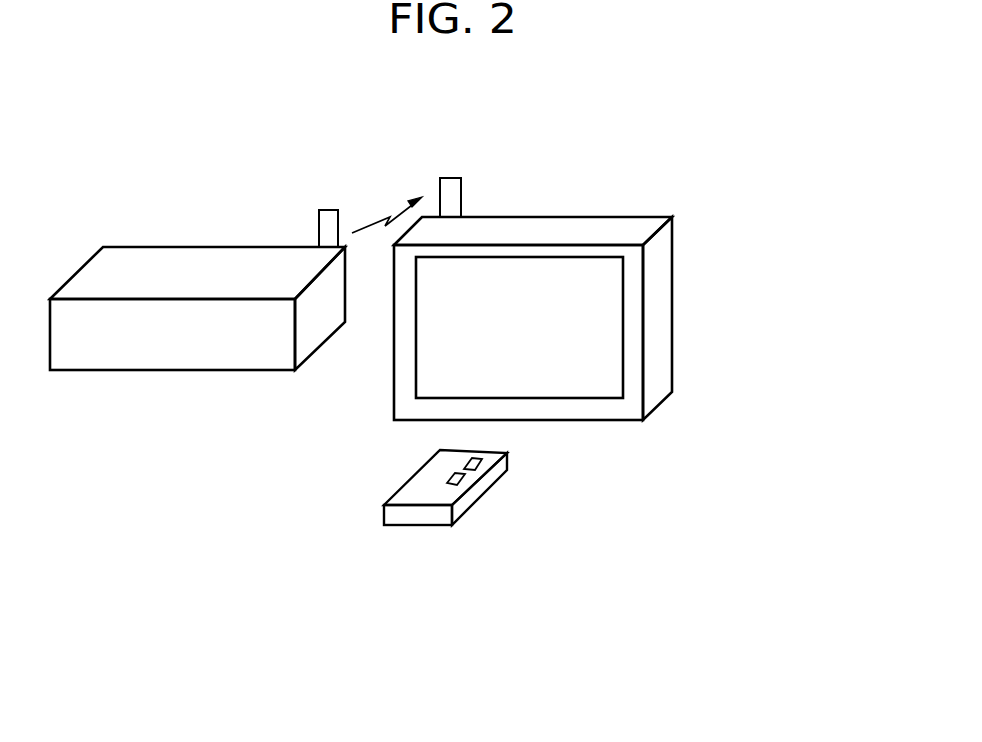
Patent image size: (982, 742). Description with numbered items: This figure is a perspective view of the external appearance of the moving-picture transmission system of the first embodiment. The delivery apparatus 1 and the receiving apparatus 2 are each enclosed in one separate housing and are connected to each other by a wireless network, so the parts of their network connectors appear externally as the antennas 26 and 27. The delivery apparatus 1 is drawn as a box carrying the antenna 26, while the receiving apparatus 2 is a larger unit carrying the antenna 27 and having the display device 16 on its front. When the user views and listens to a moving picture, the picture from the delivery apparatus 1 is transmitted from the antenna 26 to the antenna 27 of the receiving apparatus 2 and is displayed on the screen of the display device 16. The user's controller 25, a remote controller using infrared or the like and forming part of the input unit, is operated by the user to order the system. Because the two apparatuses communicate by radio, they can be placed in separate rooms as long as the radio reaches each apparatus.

The delivery apparatus 1 is at (127, 247).
The receiving apparatus 2 is at (564, 217).
The display device 16 is at (623, 310).
The user's controller 25 is at (487, 487).
The antenna 26 is at (327, 210).
The antenna 27 is at (448, 178).